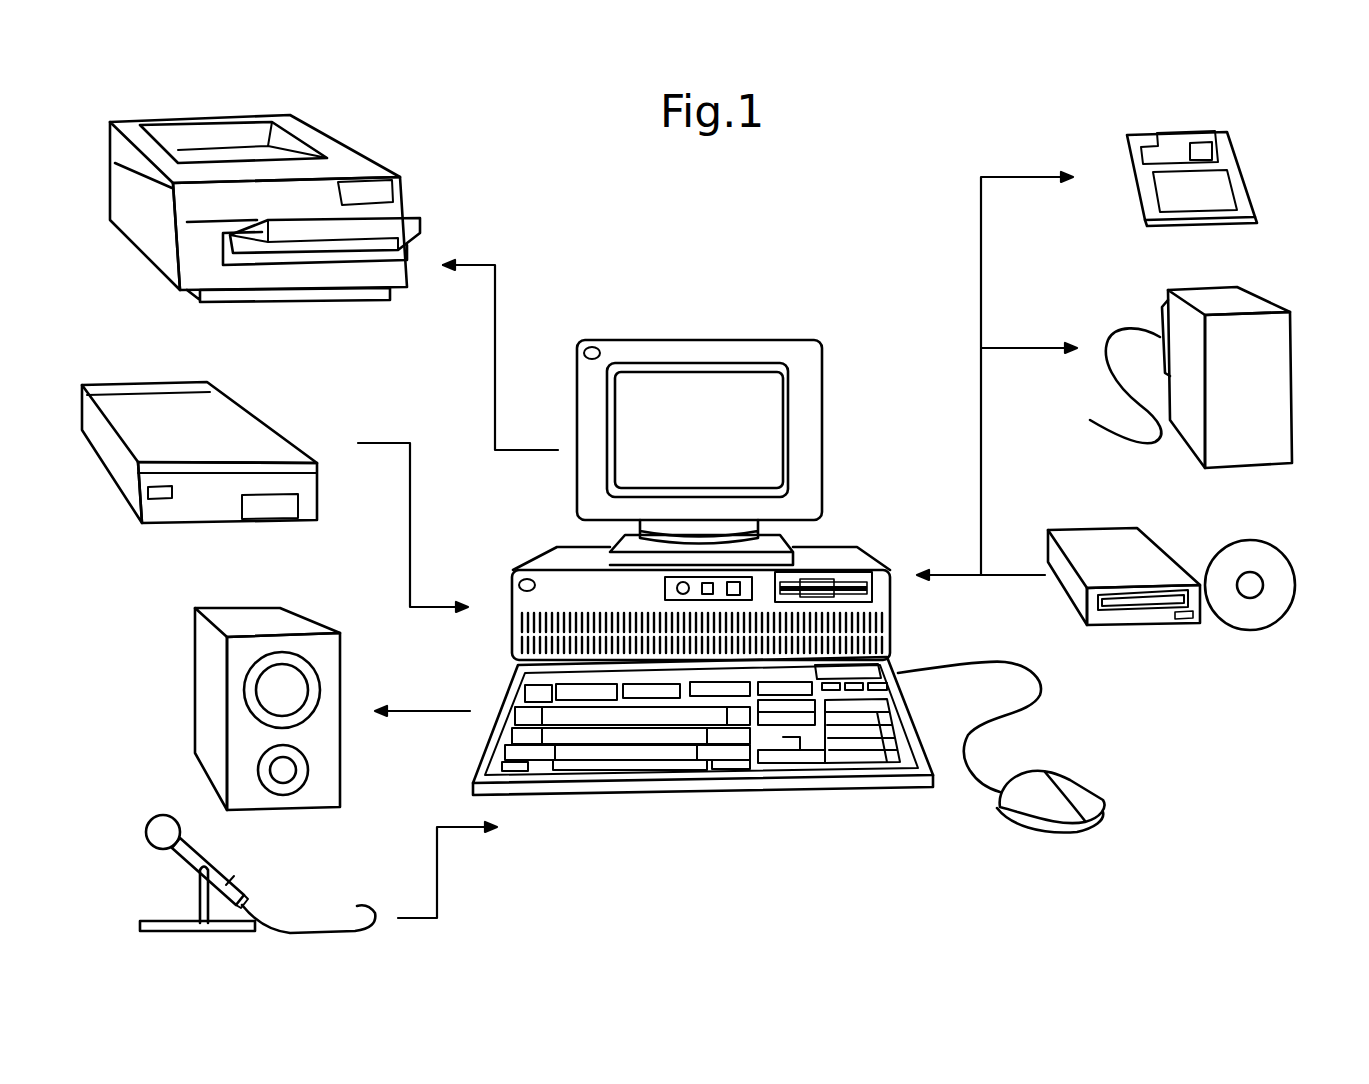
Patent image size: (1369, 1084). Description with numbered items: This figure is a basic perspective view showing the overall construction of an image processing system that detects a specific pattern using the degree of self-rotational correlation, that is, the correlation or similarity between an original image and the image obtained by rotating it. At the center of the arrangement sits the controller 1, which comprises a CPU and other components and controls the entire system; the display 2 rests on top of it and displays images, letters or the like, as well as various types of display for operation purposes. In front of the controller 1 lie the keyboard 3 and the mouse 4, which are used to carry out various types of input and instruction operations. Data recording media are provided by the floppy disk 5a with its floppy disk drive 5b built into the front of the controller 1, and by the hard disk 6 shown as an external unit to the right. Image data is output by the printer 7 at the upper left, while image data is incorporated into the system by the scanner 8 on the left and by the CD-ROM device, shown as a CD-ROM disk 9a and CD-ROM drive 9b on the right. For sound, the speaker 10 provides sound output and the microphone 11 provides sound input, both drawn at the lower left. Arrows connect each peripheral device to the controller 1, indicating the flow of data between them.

The controller 1 is at (684, 580).
The display 2 is at (575, 422).
The keyboard 3 is at (500, 697).
The mouse 4 is at (1043, 807).
The floppy disk 5a is at (1223, 190).
The floppy disk 5b is at (860, 567).
The hard disk 6 is at (1242, 300).
The printer 7 is at (355, 163).
The scanner 8 is at (240, 430).
The CD-ROM device 9a is at (1275, 558).
The CD-ROM device 9b is at (1107, 547).
The speaker 10 is at (267, 617).
The microphone 11 is at (223, 885).